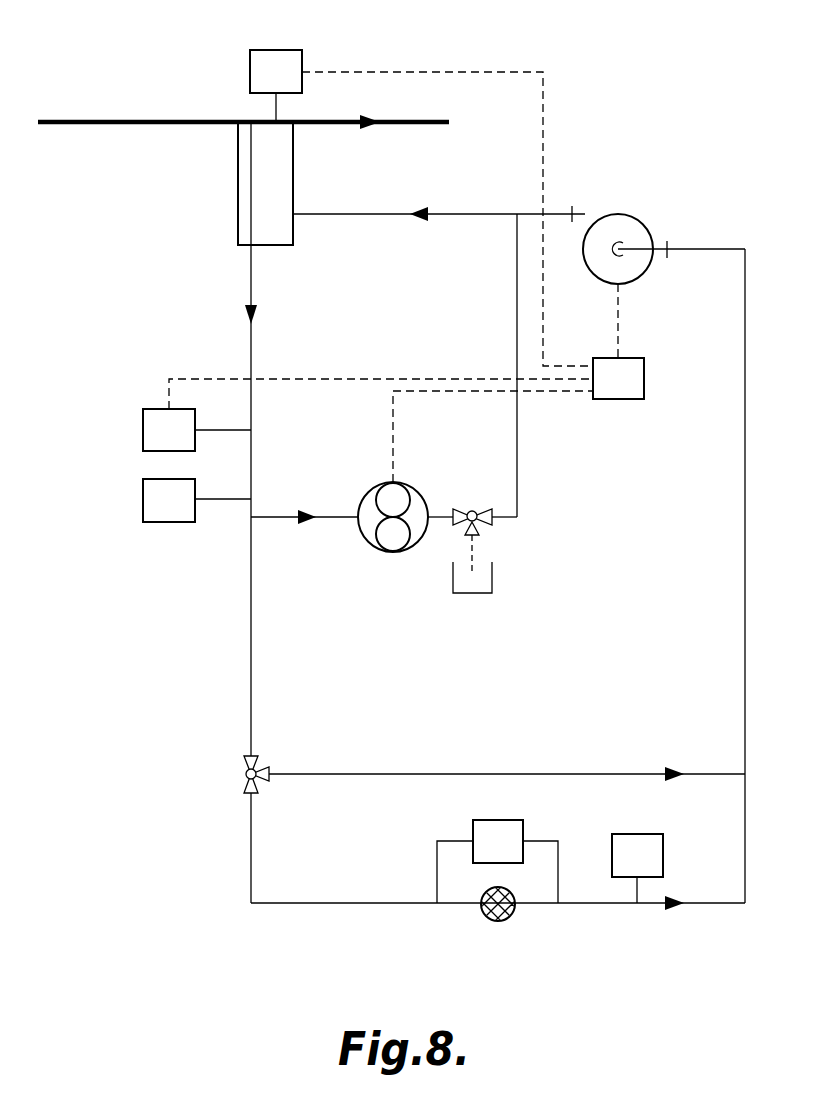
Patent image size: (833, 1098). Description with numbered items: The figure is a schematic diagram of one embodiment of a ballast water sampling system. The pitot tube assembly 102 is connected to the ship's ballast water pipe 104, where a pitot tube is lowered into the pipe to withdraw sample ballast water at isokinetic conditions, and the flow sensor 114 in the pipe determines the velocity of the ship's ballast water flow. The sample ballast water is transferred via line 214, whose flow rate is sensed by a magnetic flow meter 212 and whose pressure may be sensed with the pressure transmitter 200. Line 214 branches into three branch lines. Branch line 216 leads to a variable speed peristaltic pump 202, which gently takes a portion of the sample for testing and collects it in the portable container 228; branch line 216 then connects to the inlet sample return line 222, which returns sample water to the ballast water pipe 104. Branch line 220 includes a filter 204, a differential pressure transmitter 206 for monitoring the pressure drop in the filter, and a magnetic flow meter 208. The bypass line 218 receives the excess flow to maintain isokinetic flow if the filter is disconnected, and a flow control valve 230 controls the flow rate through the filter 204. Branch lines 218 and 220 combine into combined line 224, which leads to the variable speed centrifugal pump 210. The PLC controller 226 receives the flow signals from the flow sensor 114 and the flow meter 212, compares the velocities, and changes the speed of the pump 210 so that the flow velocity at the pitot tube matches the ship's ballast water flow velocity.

The ballast water pipe 104 is at (113, 122).
The flow sensor 114 is at (262, 50).
The pitot tube assembly 102 is at (238, 201).
The line 214 is at (251, 278).
The inlet sample return line 222 is at (352, 214).
The variable speed centrifugal pump 210 is at (640, 224).
The combined line 224 is at (745, 397).
The PLC controller 226 is at (626, 399).
The magnetic flow meter 212 is at (143, 427).
The pressure transmitter 200 is at (143, 497).
The branch line 216 is at (279, 517).
The variable speed peristaltic pump 202 is at (368, 545).
The portable container 228 is at (497, 566).
The flow control valve 230 is at (247, 760).
The bypass line 218 is at (341, 774).
The branch line 220 is at (279, 903).
The differential pressure transmitter 206 is at (473, 822).
The filter 204 is at (484, 914).
The magnetic flow meter 208 is at (655, 834).